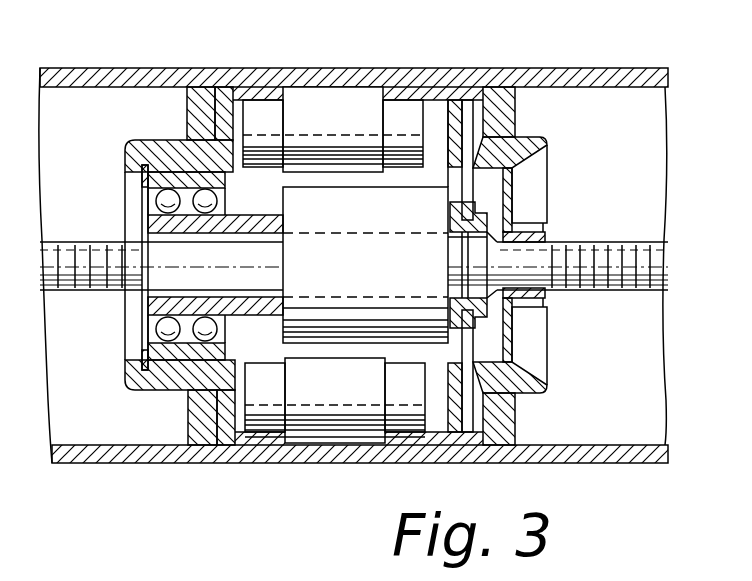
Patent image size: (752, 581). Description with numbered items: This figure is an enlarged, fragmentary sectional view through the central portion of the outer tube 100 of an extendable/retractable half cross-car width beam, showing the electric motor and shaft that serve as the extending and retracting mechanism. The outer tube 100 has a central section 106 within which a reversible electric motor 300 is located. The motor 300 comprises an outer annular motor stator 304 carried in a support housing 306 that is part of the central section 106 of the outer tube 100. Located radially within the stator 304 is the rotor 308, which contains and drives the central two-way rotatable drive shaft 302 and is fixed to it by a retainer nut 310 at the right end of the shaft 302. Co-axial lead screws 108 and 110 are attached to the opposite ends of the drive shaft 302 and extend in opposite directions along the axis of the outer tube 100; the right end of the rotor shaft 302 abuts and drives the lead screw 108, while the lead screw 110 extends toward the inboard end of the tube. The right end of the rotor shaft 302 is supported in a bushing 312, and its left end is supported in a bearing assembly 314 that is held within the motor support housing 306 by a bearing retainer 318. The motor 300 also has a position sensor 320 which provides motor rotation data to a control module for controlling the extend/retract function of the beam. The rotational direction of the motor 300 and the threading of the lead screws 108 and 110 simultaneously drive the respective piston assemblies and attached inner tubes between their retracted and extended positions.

The outer tube 100 is at (593, 59).
The central section 106 is at (393, 70).
The lead screw 108 is at (653, 261).
The lead screw 110 is at (63, 243).
The electric motor 300 is at (532, 187).
The drive shaft 302 is at (240, 262).
The motor stator 304 is at (345, 134).
The support housing 306 is at (338, 72).
The rotor 308 is at (395, 224).
The retainer nut 310 is at (478, 220).
The bushing 312 is at (547, 237).
The bearing assembly 314 is at (168, 357).
The bearing retainer 318 is at (143, 357).
The position sensor 320 is at (446, 108).